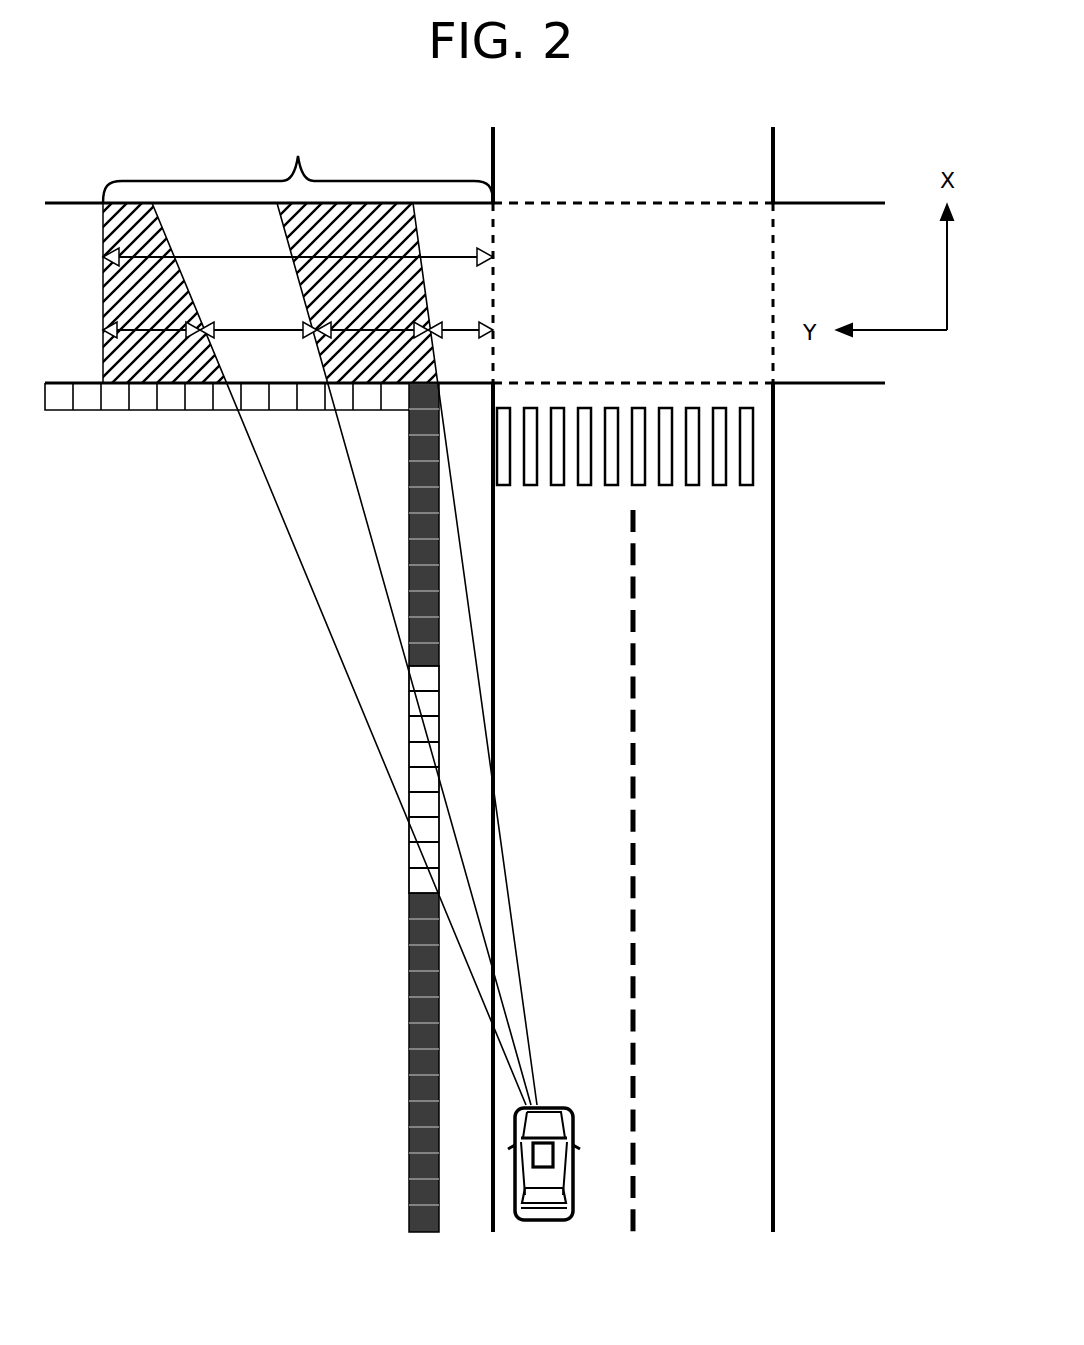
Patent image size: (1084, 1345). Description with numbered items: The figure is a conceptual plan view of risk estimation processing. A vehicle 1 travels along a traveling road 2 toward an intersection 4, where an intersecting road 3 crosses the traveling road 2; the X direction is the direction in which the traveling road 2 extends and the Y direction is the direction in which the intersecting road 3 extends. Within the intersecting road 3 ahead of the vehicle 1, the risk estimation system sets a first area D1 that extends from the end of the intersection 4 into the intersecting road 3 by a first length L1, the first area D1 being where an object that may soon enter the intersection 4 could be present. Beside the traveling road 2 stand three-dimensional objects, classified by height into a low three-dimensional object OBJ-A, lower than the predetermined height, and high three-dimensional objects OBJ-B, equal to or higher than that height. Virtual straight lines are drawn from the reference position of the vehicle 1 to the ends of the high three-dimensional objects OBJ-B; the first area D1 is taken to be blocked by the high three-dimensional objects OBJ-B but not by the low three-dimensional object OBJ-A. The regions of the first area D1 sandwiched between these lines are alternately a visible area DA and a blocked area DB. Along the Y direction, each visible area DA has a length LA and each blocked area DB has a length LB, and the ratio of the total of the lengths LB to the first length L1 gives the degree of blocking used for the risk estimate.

The vehicle 1 is at (573, 1160).
The traveling road 2 is at (571, 647).
The intersecting road 3 is at (62, 317).
The intersection 4 is at (628, 240).
The first area D1 is at (298, 159).
The blocked area DB is at (147, 357).
The visible area DA is at (258, 353).
The first length L1 is at (298, 242).
The length of visible area LA is at (346, 315).
The length of blocked area LB is at (265, 315).
The low three-dimensional object OBJ-A is at (410, 867).
The high three-dimensional object OBJ-B is at (407, 1038).